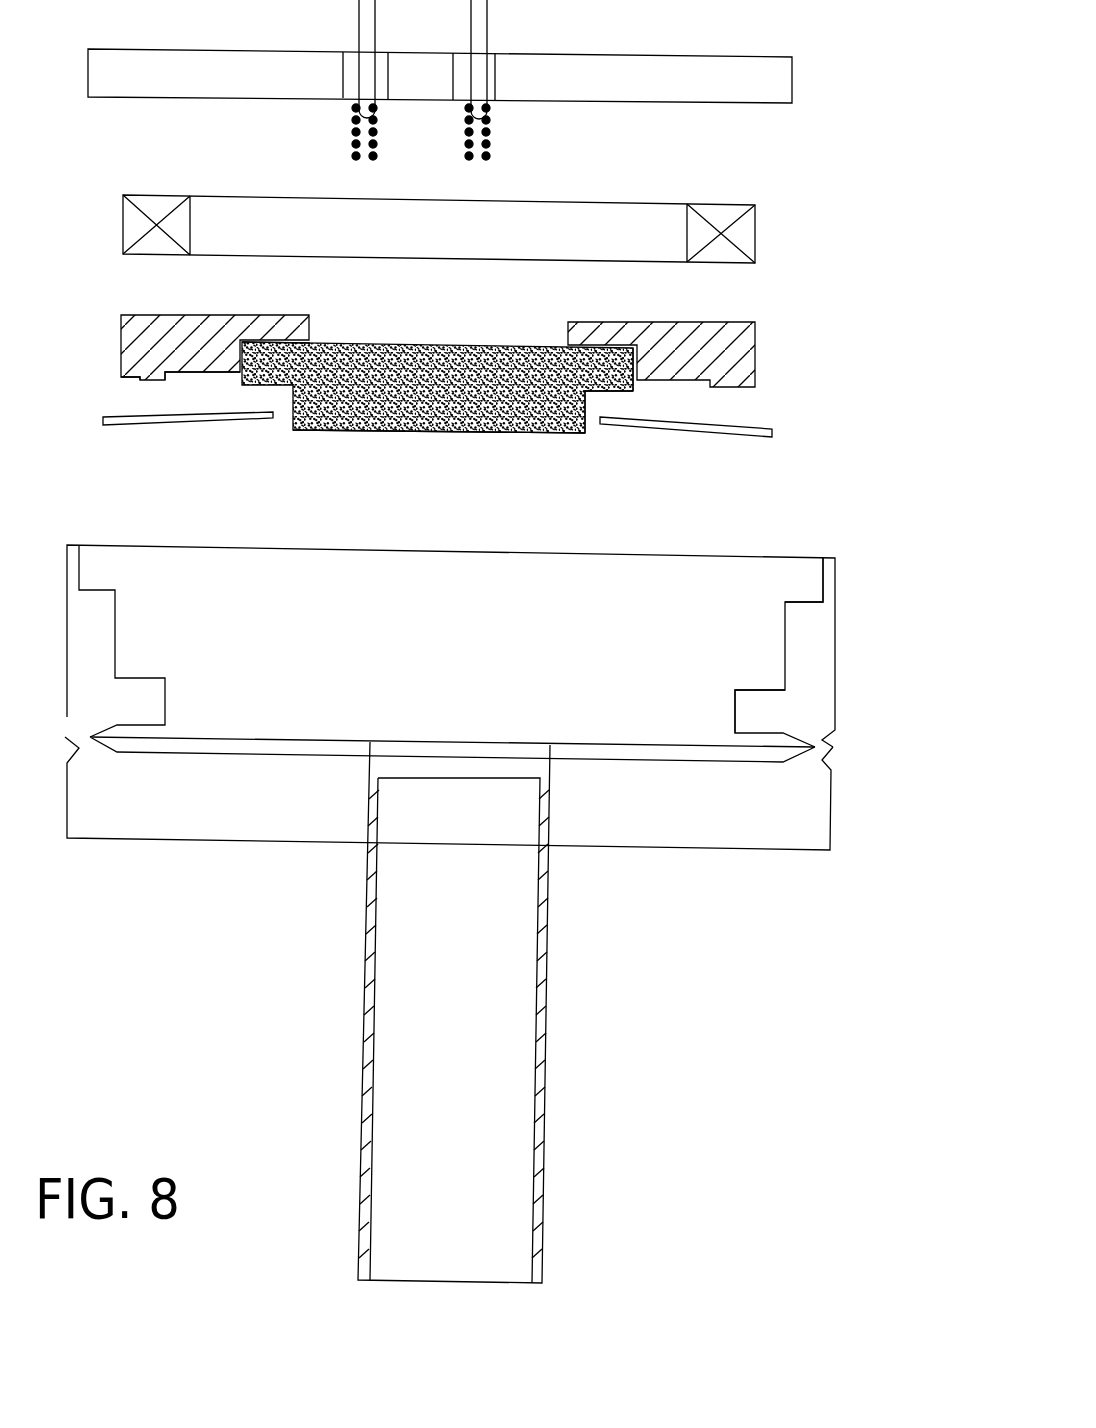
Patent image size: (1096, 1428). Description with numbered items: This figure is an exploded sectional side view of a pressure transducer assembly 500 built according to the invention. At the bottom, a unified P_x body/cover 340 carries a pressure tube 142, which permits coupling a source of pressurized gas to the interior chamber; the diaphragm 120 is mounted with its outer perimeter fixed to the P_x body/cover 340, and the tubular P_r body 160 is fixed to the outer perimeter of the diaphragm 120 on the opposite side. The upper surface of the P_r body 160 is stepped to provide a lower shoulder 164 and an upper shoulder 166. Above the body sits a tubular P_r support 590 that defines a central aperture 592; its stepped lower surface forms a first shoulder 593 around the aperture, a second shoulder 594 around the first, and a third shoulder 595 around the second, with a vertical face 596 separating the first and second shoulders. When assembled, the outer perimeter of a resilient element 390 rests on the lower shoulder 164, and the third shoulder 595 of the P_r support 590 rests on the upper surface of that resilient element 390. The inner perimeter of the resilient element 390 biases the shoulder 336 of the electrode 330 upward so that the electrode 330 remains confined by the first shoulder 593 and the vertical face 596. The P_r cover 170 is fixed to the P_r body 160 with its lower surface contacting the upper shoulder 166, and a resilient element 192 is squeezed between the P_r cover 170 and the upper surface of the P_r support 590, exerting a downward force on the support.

The P_r cover 170 is at (665, 57).
The resilient element 192 is at (757, 237).
The P_r support 590 is at (757, 350).
The third shoulder 595 is at (140, 388).
The second shoulder 594 is at (207, 373).
The first shoulder 593 is at (303, 352).
The central aperture 592 is at (411, 338).
The vertical face 596 is at (632, 360).
The shoulder 336 is at (625, 392).
The electrode 330 is at (473, 433).
The resilient element 390 is at (725, 437).
The P_r body 160 is at (844, 677).
The upper shoulder 166 is at (813, 600).
The lower shoulder 164 is at (765, 687).
The diaphragm 120 is at (277, 738).
The P_x body/cover 340 is at (832, 808).
The pressure tube 142 is at (545, 1063).
The transducer assembly 500 is at (502, 914).